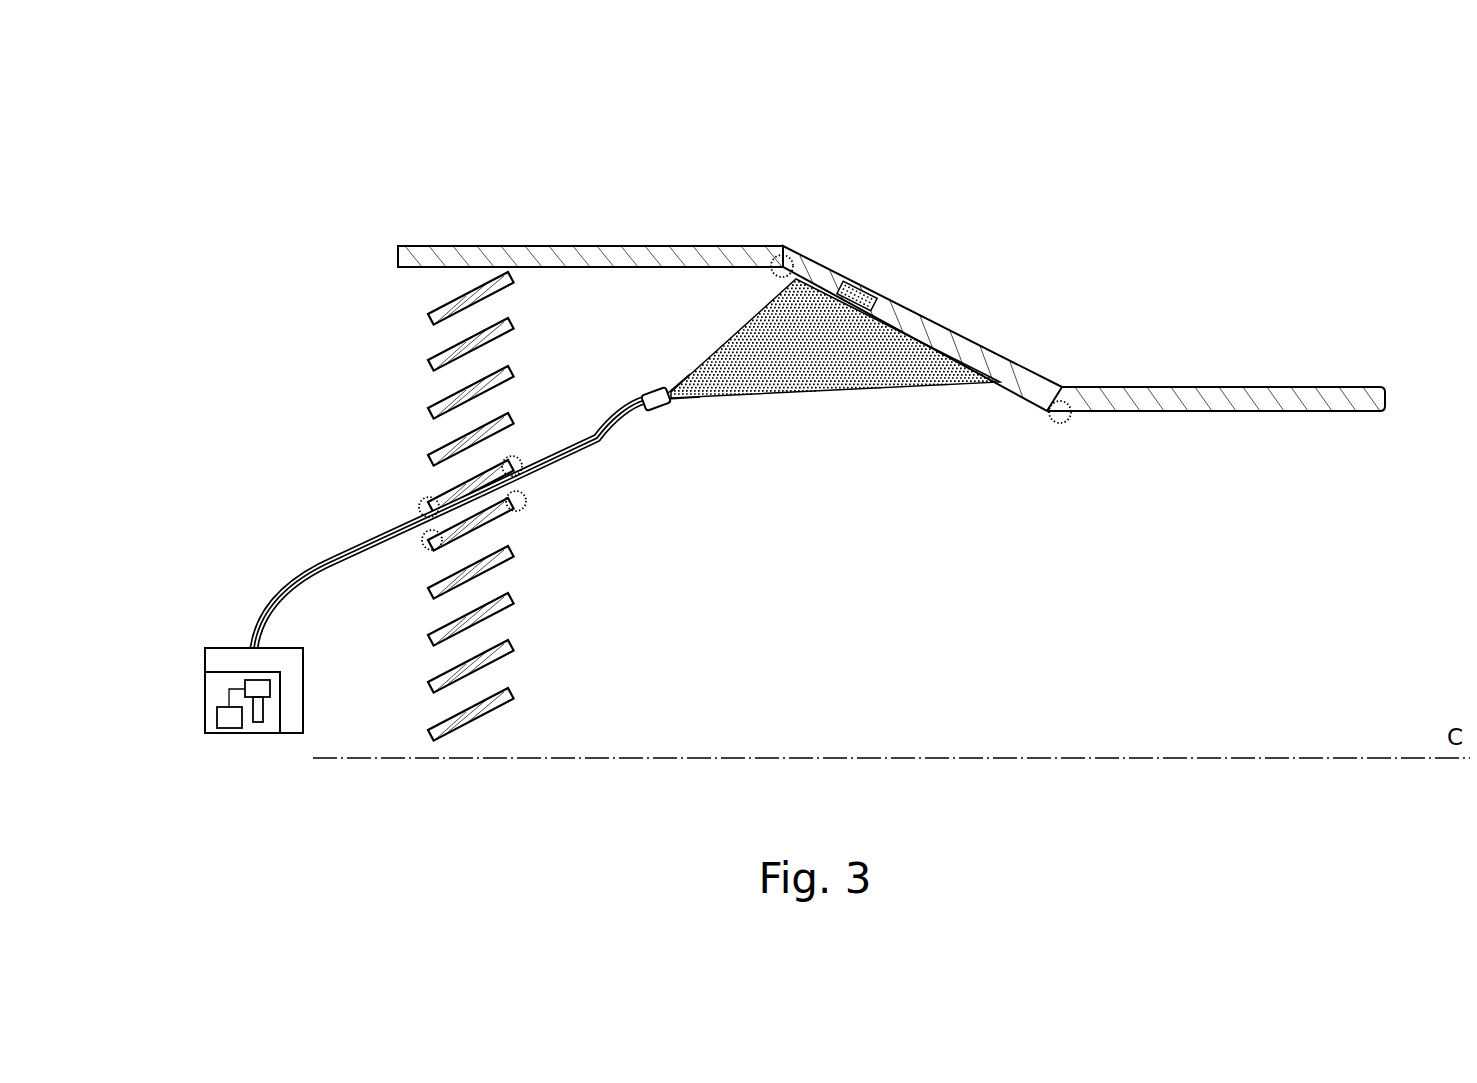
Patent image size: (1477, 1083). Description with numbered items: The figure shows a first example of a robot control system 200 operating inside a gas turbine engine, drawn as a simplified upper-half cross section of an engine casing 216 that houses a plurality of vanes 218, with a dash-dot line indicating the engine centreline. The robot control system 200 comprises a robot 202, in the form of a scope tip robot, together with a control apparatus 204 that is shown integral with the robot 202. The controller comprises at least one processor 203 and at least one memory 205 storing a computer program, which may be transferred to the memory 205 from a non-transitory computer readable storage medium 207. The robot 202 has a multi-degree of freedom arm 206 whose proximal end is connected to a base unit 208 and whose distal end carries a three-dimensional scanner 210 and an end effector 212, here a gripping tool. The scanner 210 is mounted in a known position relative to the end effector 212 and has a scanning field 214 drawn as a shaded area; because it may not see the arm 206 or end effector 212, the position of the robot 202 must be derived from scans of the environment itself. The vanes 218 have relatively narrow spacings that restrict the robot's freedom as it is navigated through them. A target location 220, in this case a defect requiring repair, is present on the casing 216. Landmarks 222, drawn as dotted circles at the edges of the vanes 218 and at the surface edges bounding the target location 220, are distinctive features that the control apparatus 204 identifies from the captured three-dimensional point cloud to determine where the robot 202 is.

The robot control system 200 is at (233, 647).
The robot 202 is at (353, 550).
The processor 203 is at (217, 713).
The control apparatus 204 is at (235, 733).
The memory 205 is at (270, 690).
The multi-degree of freedom arm 206 is at (588, 450).
The non-transitory computer readable storage medium 207 is at (260, 733).
The base unit 208 is at (305, 707).
The 3D scanner 210 is at (652, 388).
The end effector 212 is at (670, 398).
The scanning field 214 is at (838, 384).
The engine casing 216 is at (643, 245).
The vanes 218 is at (440, 357).
The target location 220 is at (862, 285).
The landmarks 222 is at (780, 252).